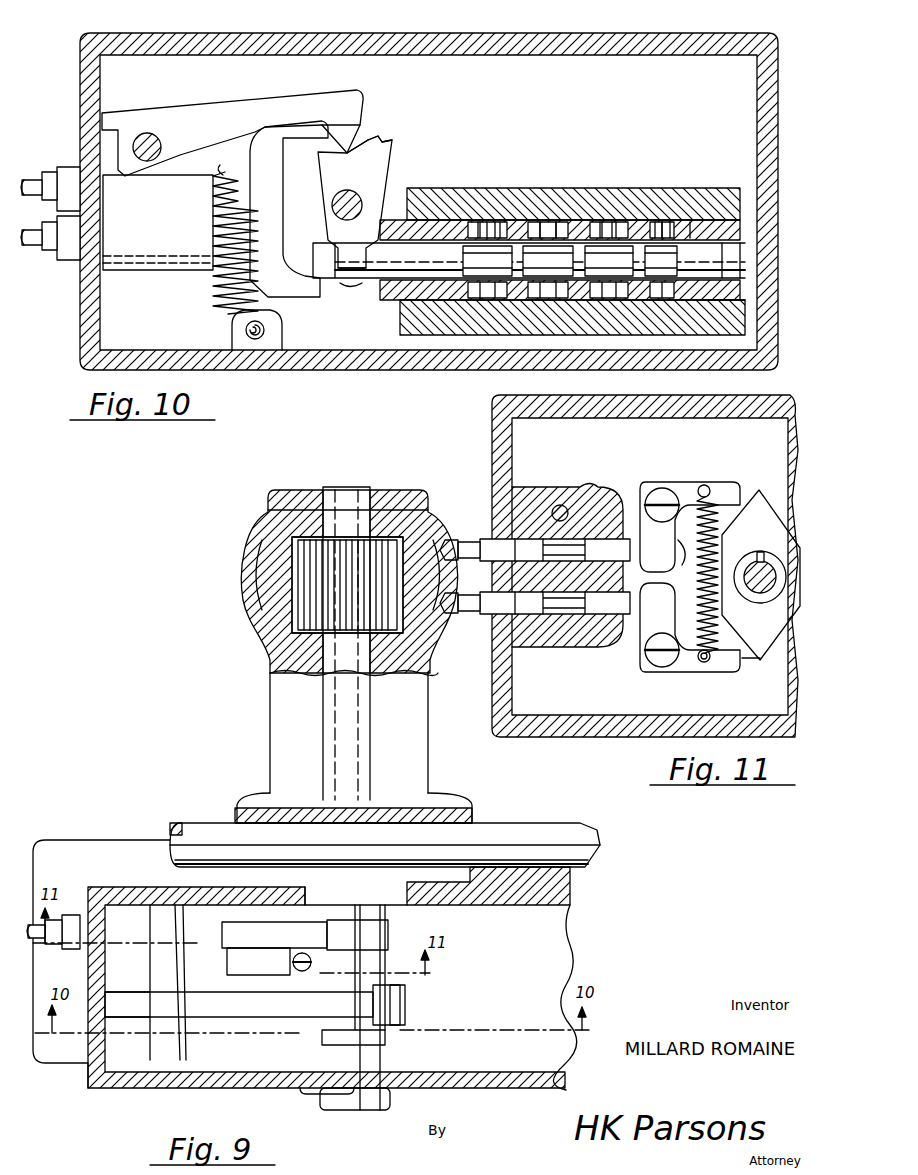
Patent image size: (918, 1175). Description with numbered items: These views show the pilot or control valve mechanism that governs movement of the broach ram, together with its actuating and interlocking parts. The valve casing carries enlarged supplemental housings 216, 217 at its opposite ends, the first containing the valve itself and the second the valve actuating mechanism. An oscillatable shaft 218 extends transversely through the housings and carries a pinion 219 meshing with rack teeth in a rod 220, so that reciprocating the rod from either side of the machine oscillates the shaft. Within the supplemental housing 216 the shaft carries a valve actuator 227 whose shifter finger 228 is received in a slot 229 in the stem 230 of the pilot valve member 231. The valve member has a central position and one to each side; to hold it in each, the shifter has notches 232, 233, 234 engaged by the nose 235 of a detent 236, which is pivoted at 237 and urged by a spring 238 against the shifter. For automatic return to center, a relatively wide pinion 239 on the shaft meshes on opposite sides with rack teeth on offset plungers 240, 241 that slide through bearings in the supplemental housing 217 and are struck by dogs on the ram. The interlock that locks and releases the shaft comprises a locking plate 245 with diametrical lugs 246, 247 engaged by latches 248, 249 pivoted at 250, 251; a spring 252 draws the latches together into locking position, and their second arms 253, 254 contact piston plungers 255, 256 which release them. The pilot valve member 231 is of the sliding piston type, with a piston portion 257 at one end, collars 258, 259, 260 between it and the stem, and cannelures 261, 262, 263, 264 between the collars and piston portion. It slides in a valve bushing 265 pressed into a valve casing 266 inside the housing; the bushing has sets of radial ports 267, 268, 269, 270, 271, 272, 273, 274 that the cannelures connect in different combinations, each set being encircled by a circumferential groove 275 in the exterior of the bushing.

In FIG. 10, the supplemental housing 216 is at (408, 34).
In FIG. 11, the supplemental housing 216 is at (500, 458).
In FIG. 9, the supplemental housing 216 is at (285, 1088).
In FIG. 9, the supplemental housing 217 is at (262, 528).
In FIG. 9, the oscillatable shaft 218 is at (350, 492).
In FIG. 9, the pinion 219 is at (395, 803).
In FIG. 9, the rack rod 220 is at (540, 823).
In FIG. 10, the valve actuator 227 is at (390, 175).
In FIG. 9, the valve actuator 227 is at (405, 1007).
In FIG. 10, the shifter finger 228 is at (352, 288).
In FIG. 10, the slot 229 is at (338, 285).
In FIG. 10, the stem 230 is at (378, 245).
In FIG. 10, the pilot valve member 231 is at (740, 250).
In FIG. 10, the notch 232 is at (288, 178).
In FIG. 10, the notch 233 is at (342, 187).
In FIG. 10, the notch 234 is at (384, 144).
In FIG. 10, the nose 235 is at (368, 132).
In FIG. 10, the detent 236 is at (238, 104).
In FIG. 9, the detent 236 is at (220, 1020).
In FIG. 10, the pivot 237 is at (152, 135).
In FIG. 10, the spring 238 is at (228, 300).
In FIG. 9, the wide pinion 239 is at (400, 553).
In FIG. 9, the plunger 240 is at (256, 605).
In FIG. 9, the plunger 241 is at (432, 620).
In FIG. 11, the locking plate 245 is at (765, 530).
In FIG. 9, the locking plate 245 is at (388, 935).
In FIG. 11, the lug 246 is at (740, 500).
In FIG. 11, the lug 247 is at (748, 660).
In FIG. 10, the latch 248 is at (305, 145).
In FIG. 11, the latch 248 is at (695, 482).
In FIG. 9, the latch 248 is at (275, 952).
In FIG. 10, the latch 249 is at (305, 310).
In FIG. 11, the latch 249 is at (700, 668).
In FIG. 11, the pivot 250 is at (670, 488).
In FIG. 11, the pivot 251 is at (665, 660).
In FIG. 11, the spring 252 is at (710, 535).
In FIG. 9, the spring 252 is at (302, 972).
In FIG. 11, the second arm 253 is at (676, 552).
In FIG. 11, the second arm 254 is at (655, 618).
In FIG. 11, the piston plunger 255 is at (590, 540).
In FIG. 11, the piston plunger 256 is at (620, 600).
In FIG. 10, the piston portion 257 is at (718, 200).
In FIG. 10, the collar 258 is at (490, 230).
In FIG. 10, the collar 259 is at (598, 228).
In FIG. 10, the collar 260 is at (662, 228).
In FIG. 10, the cannelure 261 is at (478, 282).
In FIG. 10, the cannelure 262 is at (560, 282).
In FIG. 10, the cannelure 263 is at (600, 282).
In FIG. 10, the cannelure 264 is at (662, 282).
In FIG. 10, the valve bushing 265 is at (730, 300).
In FIG. 10, the valve casing 266 is at (735, 335).
In FIG. 10, the radial ports 267 is at (480, 225).
In FIG. 10, the radial ports 268 is at (505, 230).
In FIG. 10, the radial ports 269 is at (540, 225).
In FIG. 10, the radial ports 270 is at (556, 225).
In FIG. 10, the radial ports 271 is at (612, 228).
In FIG. 10, the radial ports 272 is at (652, 228).
In FIG. 10, the radial ports 273 is at (670, 228).
In FIG. 10, the radial ports 274 is at (692, 228).
In FIG. 10, the circumferential groove 275 is at (487, 300).